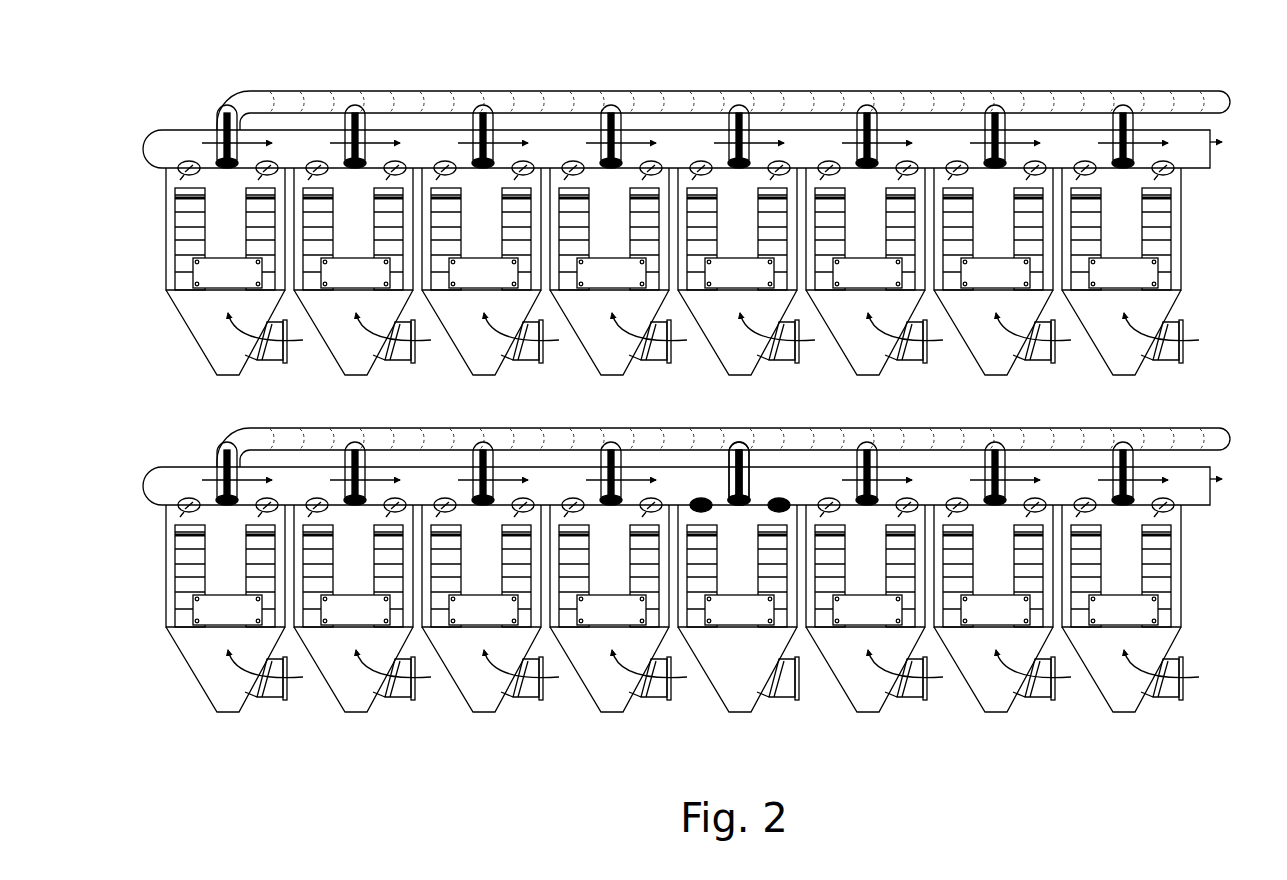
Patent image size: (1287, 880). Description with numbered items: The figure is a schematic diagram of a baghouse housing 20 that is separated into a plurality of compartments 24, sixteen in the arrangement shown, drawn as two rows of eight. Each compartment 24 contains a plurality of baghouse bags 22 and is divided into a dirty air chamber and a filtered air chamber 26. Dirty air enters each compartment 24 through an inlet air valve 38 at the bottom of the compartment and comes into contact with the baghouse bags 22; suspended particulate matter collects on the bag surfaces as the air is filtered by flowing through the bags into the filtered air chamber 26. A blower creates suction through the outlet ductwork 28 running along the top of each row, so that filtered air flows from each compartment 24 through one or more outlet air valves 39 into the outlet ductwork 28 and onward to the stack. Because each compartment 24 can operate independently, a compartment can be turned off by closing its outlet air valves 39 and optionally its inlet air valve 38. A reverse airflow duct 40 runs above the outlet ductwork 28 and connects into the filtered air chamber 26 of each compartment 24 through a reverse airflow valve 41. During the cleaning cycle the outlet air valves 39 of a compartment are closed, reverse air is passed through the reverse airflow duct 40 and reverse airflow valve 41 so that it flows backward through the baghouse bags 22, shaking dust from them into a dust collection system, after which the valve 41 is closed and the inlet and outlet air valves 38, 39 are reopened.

The baghouse housing 20 is at (1183, 195).
The baghouse bag 22 is at (1160, 228).
The compartment 24 is at (1186, 247).
The filtered air chamber 26 is at (227, 533).
The outlet ductwork 28 is at (170, 475).
The inlet air valve 38 is at (1187, 356).
The outlet air valve 39 is at (700, 497).
The reverse airflow duct 40 is at (528, 98).
The reverse airflow valve 41 is at (737, 506).